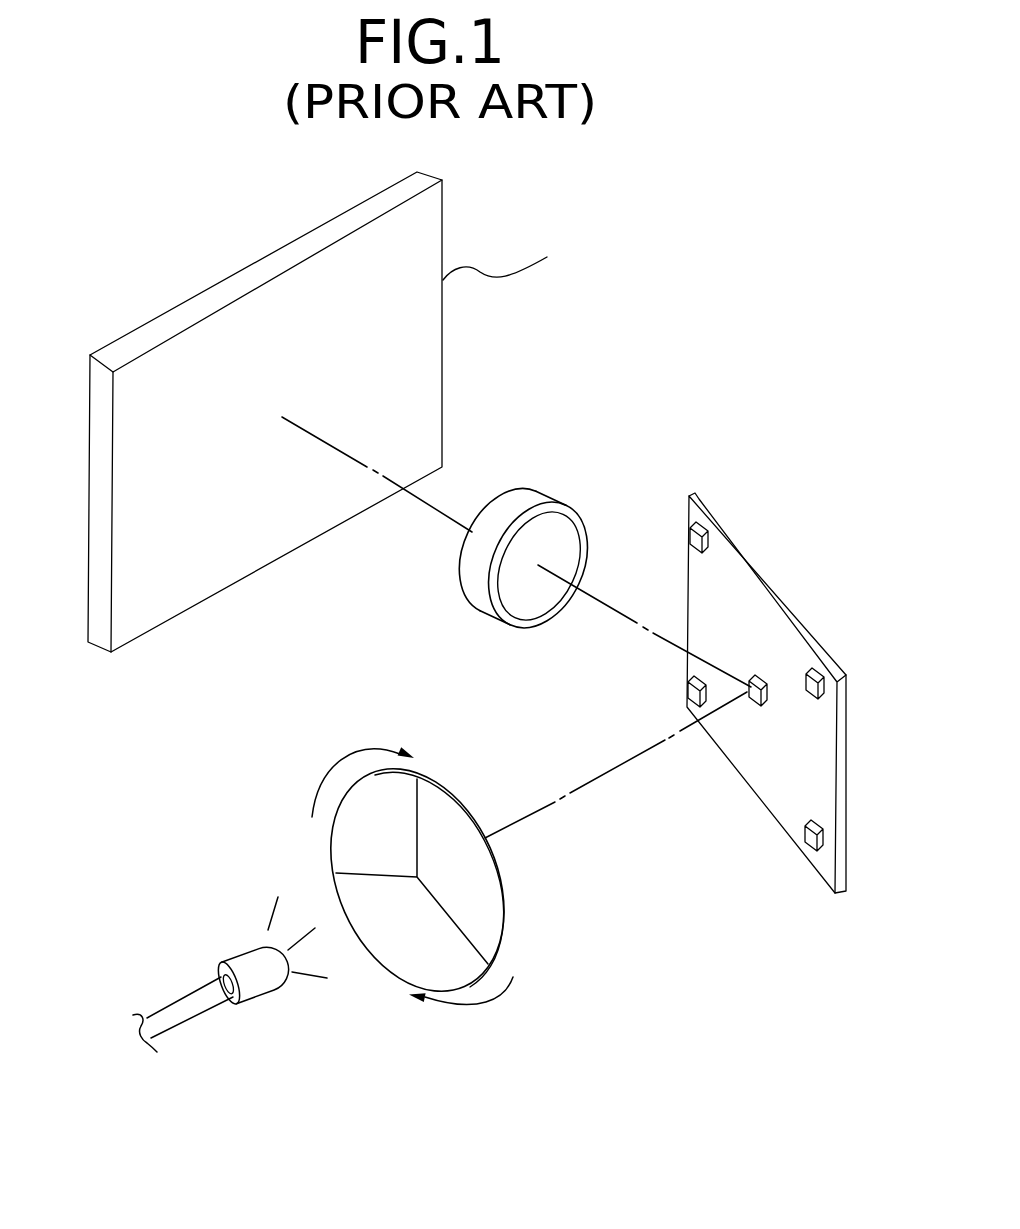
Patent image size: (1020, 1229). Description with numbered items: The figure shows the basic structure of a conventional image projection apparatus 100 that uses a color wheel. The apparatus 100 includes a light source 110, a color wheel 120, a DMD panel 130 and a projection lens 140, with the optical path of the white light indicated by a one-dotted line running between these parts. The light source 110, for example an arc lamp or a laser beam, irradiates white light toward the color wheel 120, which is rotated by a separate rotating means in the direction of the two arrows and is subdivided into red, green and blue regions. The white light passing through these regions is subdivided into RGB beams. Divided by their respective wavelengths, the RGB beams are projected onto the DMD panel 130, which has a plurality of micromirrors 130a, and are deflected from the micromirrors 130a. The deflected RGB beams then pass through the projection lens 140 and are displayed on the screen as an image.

The conventional image projection apparatus 100 is at (133, 235).
The light source 110 is at (245, 967).
The color wheel 120 is at (502, 897).
The DMD panel 130 is at (803, 620).
The micromirror 130a is at (755, 675).
The projection lens 140 is at (535, 488).